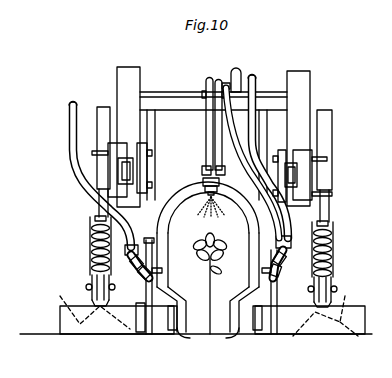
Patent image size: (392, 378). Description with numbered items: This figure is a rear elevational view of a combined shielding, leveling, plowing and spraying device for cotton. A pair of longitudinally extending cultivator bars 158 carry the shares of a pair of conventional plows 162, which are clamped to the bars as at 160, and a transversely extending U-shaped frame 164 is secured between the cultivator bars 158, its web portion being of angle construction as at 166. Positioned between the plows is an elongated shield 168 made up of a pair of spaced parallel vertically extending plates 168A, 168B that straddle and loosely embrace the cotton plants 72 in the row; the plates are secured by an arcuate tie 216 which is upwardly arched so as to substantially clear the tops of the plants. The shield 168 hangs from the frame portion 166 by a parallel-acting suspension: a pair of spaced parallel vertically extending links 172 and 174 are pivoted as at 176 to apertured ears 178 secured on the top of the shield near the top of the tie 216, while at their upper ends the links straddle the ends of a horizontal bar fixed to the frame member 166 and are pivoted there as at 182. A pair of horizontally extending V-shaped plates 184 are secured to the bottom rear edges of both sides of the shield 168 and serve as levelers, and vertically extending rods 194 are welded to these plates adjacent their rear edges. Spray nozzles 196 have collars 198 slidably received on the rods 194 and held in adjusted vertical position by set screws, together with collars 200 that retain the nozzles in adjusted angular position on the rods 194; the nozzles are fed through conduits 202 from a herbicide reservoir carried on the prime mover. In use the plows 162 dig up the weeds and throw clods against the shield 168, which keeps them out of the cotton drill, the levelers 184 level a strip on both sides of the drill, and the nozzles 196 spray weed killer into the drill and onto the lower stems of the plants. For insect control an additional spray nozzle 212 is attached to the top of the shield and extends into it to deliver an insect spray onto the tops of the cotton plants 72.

The cotton plants 72 is at (208, 248).
The cultivator bars 158 is at (120, 172).
The clamps 160 is at (92, 153).
The plows 162 is at (206, 307).
The U-shaped frame 164 is at (148, 118).
The frame portion 166 is at (185, 91).
The shield 168 is at (258, 229).
The vertically extending plate 168A is at (188, 336).
The vertically extending plate 168B is at (237, 330).
The vertically extending link 172 is at (206, 124).
The vertically extending link 174 is at (238, 150).
The pivot 176 is at (203, 171).
The apertured ears 178 is at (215, 148).
The pivot 182 is at (224, 86).
The V-shaped plates 184 is at (137, 322).
The vertically extending rods 194 is at (146, 236).
The spray nozzles 196 is at (156, 279).
The collars 198 is at (266, 279).
The collars 200 is at (103, 266).
The conduits 202 is at (66, 112).
The spray nozzle 212 is at (215, 226).
The arcuate tie 216 is at (205, 189).